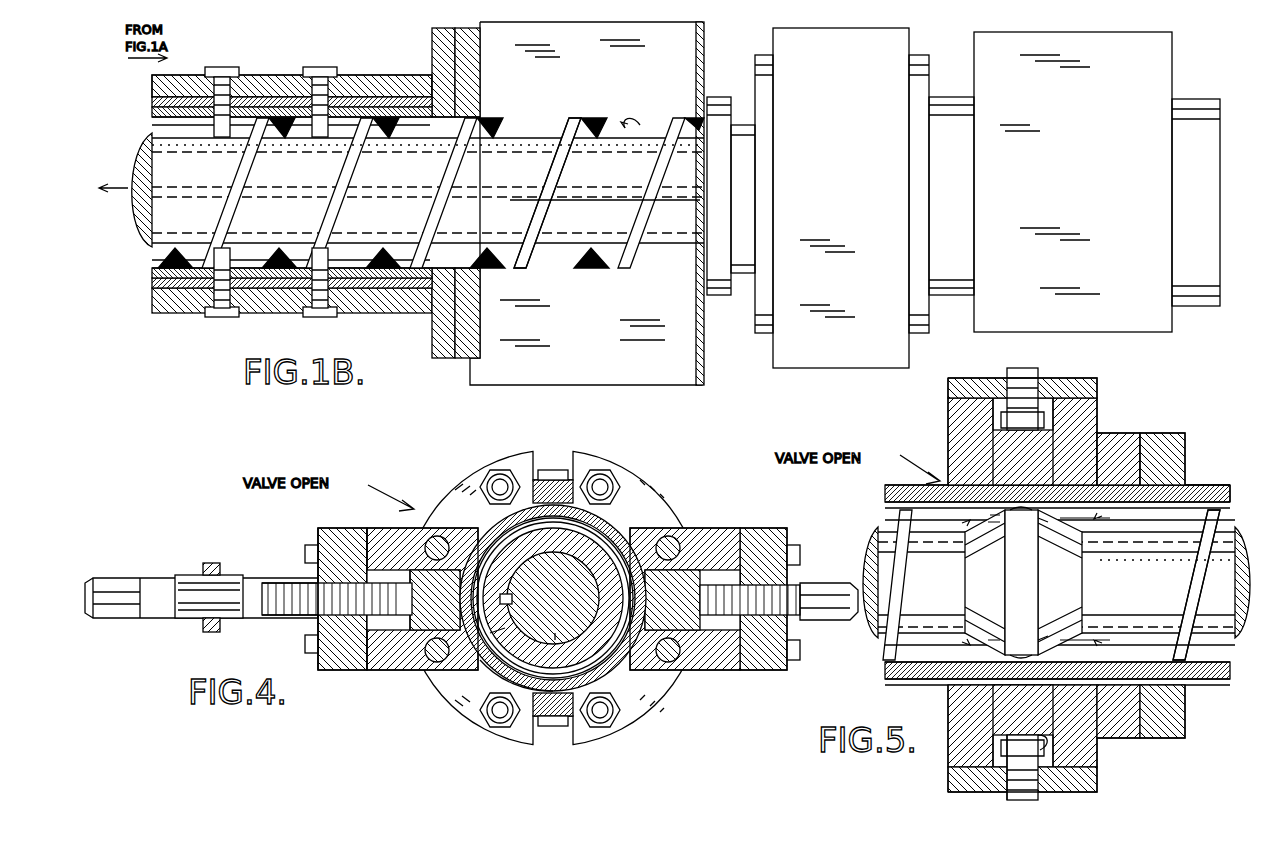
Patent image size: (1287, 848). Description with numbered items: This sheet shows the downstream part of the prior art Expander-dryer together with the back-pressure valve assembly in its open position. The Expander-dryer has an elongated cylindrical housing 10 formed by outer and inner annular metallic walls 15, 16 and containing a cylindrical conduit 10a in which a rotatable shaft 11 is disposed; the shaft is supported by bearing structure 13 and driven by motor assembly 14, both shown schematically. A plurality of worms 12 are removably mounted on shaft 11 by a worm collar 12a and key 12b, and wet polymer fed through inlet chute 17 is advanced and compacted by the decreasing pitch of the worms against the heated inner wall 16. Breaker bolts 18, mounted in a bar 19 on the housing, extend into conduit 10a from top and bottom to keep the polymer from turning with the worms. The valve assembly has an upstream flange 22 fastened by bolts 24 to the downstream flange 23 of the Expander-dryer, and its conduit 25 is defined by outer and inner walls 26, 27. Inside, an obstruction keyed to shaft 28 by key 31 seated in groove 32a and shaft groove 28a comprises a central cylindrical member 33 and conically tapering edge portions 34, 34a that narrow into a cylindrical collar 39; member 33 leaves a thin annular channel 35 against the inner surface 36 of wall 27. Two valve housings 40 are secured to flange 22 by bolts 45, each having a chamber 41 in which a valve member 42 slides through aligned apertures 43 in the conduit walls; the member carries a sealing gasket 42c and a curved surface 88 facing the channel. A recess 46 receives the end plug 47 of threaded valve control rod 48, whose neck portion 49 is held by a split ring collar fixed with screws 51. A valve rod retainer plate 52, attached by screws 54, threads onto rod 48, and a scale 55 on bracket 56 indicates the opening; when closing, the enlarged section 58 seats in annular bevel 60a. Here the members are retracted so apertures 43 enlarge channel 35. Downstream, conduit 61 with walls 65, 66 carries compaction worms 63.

In FIG. 1B, the cylindrical housing 10 is at (276, 62).
In FIG. 1B, the cylindrical conduit 10a is at (152, 122).
In FIG. 5, the cylindrical conduit 10a is at (1190, 540).
In FIG. 1B, the rotatable shaft 11 is at (497, 150).
In FIG. 5, the rotatable shaft 11 is at (1225, 598).
In FIG. 1B, the worms 12 is at (585, 135).
In FIG. 5, the worms 12 is at (1205, 530).
In FIG. 1B, the worm collar 12a is at (540, 150).
In FIG. 5, the worm collar 12a is at (1180, 522).
In FIG. 1B, the key 12b is at (577, 198).
In FIG. 1B, the bearing structure 13 is at (848, 113).
In FIG. 1B, the motor assembly 14 is at (1084, 123).
In FIG. 1B, the outer annular metallic wall 15 is at (365, 100).
In FIG. 5, the outer annular metallic wall 15 is at (1196, 485).
In FIG. 1B, the inner annular metallic wall 16 is at (405, 110).
In FIG. 5, the inner annular metallic wall 16 is at (1228, 485).
In FIG. 1B, the inlet chute 17 is at (596, 53).
In FIG. 1B, the breaker bolts 18 is at (320, 68).
In FIG. 4, the breaker bolts 18 is at (548, 470).
In FIG. 1B, the bar 19 is at (290, 80).
In FIG. 4, the bar 19 is at (568, 478).
In FIG. 4, the upstream flange 22 is at (612, 466).
In FIG. 5, the upstream flange 22 is at (1124, 433).
In FIG. 5, the downstream flange 23 is at (1164, 433).
In FIG. 4, the bolts 24 is at (610, 484).
In FIG. 5, the conduit 25 is at (918, 672).
In FIG. 4, the outer wall 26 is at (612, 525).
In FIG. 5, the outer wall 26 is at (1112, 459).
In FIG. 4, the inner wall 27 is at (475, 535).
In FIG. 5, the inner wall 27 is at (1160, 440).
In FIG. 4, the shaft 28 is at (562, 593).
In FIG. 4, the longitudinal surface groove 28a is at (545, 615).
In FIG. 4, the key 31 is at (506, 594).
In FIG. 4, the groove 32a is at (480, 584).
In FIG. 4, the central cylindrical member 33 is at (505, 540).
In FIG. 5, the central cylindrical member 33 is at (1032, 586).
In FIG. 5, the edge portion 34 is at (1073, 586).
In FIG. 5, the edge portion 34a is at (996, 586).
In FIG. 4, the annular channel 35 is at (499, 638).
In FIG. 5, the annular channel 35 is at (1021, 656).
In FIG. 4, the inner surface 36 is at (492, 668).
In FIG. 4, the cylindrical collar 39 is at (557, 640).
In FIG. 5, the cylindrical collar 39 is at (1082, 652).
In FIG. 4, the valve housing 40 is at (374, 686).
In FIG. 5, the valve housing 40 is at (940, 428).
In FIG. 4, the chamber 41 is at (730, 517).
In FIG. 5, the chamber 41 is at (1062, 793).
In FIG. 4, the valve member 42 is at (416, 640).
In FIG. 5, the valve member 42 is at (993, 449).
In FIG. 4, the sealing gasket 42c is at (388, 613).
In FIG. 4, the apertures 43 is at (640, 570).
In FIG. 5, the apertures 43 is at (1060, 430).
In FIG. 4, the bolts 45 is at (664, 662).
In FIG. 5, the recess 46 is at (1048, 740).
In FIG. 4, the end plug 47 is at (405, 565).
In FIG. 5, the end plug 47 is at (993, 719).
In FIG. 4, the valve control rod 48 is at (312, 618).
In FIG. 5, the valve control rod 48 is at (1038, 372).
In FIG. 4, the neck portion 49 is at (335, 599).
In FIG. 5, the neck portion 49 is at (1010, 770).
In FIG. 4, the screws 51 is at (373, 530).
In FIG. 4, the valve rod retainer plate 52 is at (345, 528).
In FIG. 5, the valve rod retainer plate 52 is at (1097, 389).
In FIG. 4, the screws 54 is at (302, 546).
In FIG. 4, the scale 55 is at (184, 574).
In FIG. 4, the bracket 56 is at (211, 563).
In FIG. 4, the enlarged section 58 is at (822, 584).
In FIG. 4, the annular bevel 60a is at (308, 580).
In FIG. 5, the conduit 61 is at (1035, 480).
In FIG. 5, the compaction worms 63 is at (887, 512).
In FIG. 5, the inner wall 65 is at (886, 494).
In FIG. 5, the outer wall 66 is at (1057, 475).
In FIG. 4, the curved surface 88 is at (460, 610).